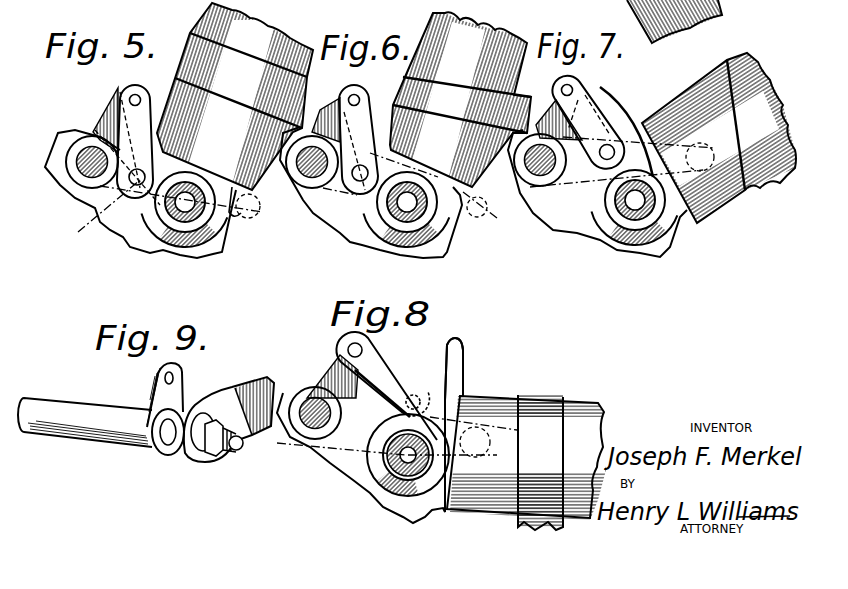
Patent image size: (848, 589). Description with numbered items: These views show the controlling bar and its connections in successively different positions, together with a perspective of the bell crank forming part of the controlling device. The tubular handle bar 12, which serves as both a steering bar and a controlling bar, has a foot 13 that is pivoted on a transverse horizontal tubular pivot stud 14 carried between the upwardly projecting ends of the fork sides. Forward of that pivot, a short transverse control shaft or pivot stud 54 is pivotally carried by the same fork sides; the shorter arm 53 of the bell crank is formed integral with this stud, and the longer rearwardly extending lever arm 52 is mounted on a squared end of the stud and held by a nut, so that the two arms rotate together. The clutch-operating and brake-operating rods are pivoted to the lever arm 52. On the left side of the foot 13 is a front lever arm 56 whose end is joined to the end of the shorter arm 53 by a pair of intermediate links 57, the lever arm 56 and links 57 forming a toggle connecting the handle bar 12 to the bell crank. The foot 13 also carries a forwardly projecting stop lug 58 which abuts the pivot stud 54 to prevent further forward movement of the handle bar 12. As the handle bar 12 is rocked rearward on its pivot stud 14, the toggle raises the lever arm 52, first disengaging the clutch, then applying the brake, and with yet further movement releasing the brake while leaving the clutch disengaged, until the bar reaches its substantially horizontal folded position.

In FIG. 5, the handle bar 12 is at (235, 96).
In FIG. 6, the handle bar 12 is at (460, 99).
In FIG. 7, the handle bar 12 is at (733, 200).
In FIG. 8, the handle bar 12 is at (482, 521).
In FIG. 5, the foot 13 is at (215, 232).
In FIG. 6, the foot 13 is at (432, 208).
In FIG. 7, the foot 13 is at (667, 227).
In FIG. 8, the foot 13 is at (377, 473).
In FIG. 5, the pivot stud 14 is at (185, 207).
In FIG. 6, the pivot stud 14 is at (413, 220).
In FIG. 7, the pivot stud 14 is at (637, 207).
In FIG. 8, the pivot stud 14 is at (405, 475).
In FIG. 5, the lever arm 52 is at (158, 222).
In FIG. 6, the lever arm 52 is at (425, 196).
In FIG. 7, the lever arm 52 is at (583, 188).
In FIG. 8, the lever arm 52 is at (327, 432).
In FIG. 9, the lever arm 52 is at (253, 391).
In FIG. 5, the arm 53 is at (118, 115).
In FIG. 6, the arm 53 is at (330, 97).
In FIG. 7, the arm 53 is at (580, 122).
In FIG. 8, the arm 53 is at (337, 368).
In FIG. 9, the arm 53 is at (153, 395).
In FIG. 8, the pivot stud 54 is at (292, 437).
In FIG. 9, the pivot stud 54 is at (68, 407).
In FIG. 5, the front lever arm 56 is at (165, 196).
In FIG. 6, the front lever arm 56 is at (372, 208).
In FIG. 7, the front lever arm 56 is at (628, 148).
In FIG. 8, the front lever arm 56 is at (382, 393).
In FIG. 5, the intermediate links 57 is at (128, 95).
In FIG. 6, the intermediate links 57 is at (354, 100).
In FIG. 7, the intermediate links 57 is at (584, 98).
In FIG. 8, the intermediate links 57 is at (390, 375).
In FIG. 7, the stop lug 58 is at (617, 97).
In FIG. 8, the stop lug 58 is at (457, 373).